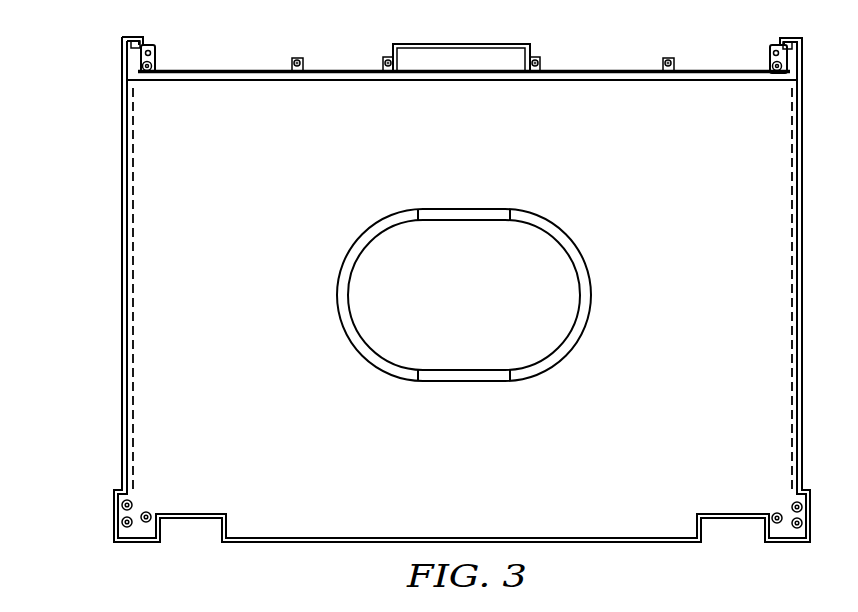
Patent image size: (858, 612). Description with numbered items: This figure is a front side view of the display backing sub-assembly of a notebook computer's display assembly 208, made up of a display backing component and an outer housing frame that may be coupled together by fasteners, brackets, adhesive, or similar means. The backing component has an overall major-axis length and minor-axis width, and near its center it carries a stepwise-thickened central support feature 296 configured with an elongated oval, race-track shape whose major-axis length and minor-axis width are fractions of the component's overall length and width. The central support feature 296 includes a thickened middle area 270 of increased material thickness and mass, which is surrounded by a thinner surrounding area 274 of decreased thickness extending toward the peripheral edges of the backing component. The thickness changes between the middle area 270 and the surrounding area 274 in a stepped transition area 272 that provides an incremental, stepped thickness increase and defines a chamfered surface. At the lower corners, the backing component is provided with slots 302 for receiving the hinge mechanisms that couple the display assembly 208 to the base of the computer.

The display assembly 208 is at (710, 70).
The thinner surrounding area 274 is at (178, 202).
The stepped transition area 272 is at (367, 230).
The thickened middle area 270 is at (468, 296).
The stepwise-thickened central support feature 296 is at (470, 208).
The slots 302 is at (183, 528).